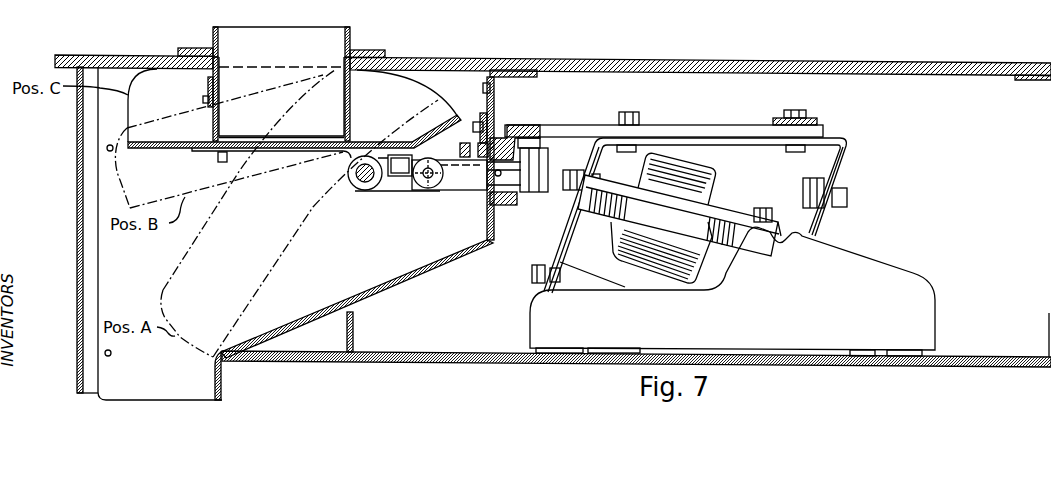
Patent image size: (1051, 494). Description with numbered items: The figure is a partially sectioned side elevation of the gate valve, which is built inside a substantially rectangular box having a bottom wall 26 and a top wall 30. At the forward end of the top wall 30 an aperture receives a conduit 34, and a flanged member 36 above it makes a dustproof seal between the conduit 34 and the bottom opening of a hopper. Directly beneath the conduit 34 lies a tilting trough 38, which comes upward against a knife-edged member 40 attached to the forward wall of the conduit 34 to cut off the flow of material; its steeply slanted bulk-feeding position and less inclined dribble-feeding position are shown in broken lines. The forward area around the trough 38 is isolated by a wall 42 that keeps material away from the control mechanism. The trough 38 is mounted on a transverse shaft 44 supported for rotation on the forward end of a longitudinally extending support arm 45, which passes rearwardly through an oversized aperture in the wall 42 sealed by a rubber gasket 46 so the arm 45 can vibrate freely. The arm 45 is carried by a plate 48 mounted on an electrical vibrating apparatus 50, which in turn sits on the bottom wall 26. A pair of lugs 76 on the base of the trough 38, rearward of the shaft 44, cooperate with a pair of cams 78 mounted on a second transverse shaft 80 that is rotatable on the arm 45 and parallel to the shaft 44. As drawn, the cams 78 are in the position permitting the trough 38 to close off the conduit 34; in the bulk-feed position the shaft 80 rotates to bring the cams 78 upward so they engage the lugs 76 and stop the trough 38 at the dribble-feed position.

The bottom wall 26 is at (983, 357).
The top wall 30 is at (865, 59).
The conduit 34 is at (343, 108).
The flanged member 36 is at (351, 50).
The tilting trough 38 is at (175, 149).
The knife-edged member 40 is at (208, 120).
The wall 42 is at (481, 97).
The transverse shaft 44 is at (358, 189).
The support arm 45 is at (458, 182).
The rubber gasket 46 is at (496, 208).
The plate 48 is at (567, 127).
The electrical vibrating apparatus 50 is at (808, 301).
The lugs 76 is at (396, 178).
The cams 78 is at (422, 189).
The transverse shaft 80 is at (460, 150).